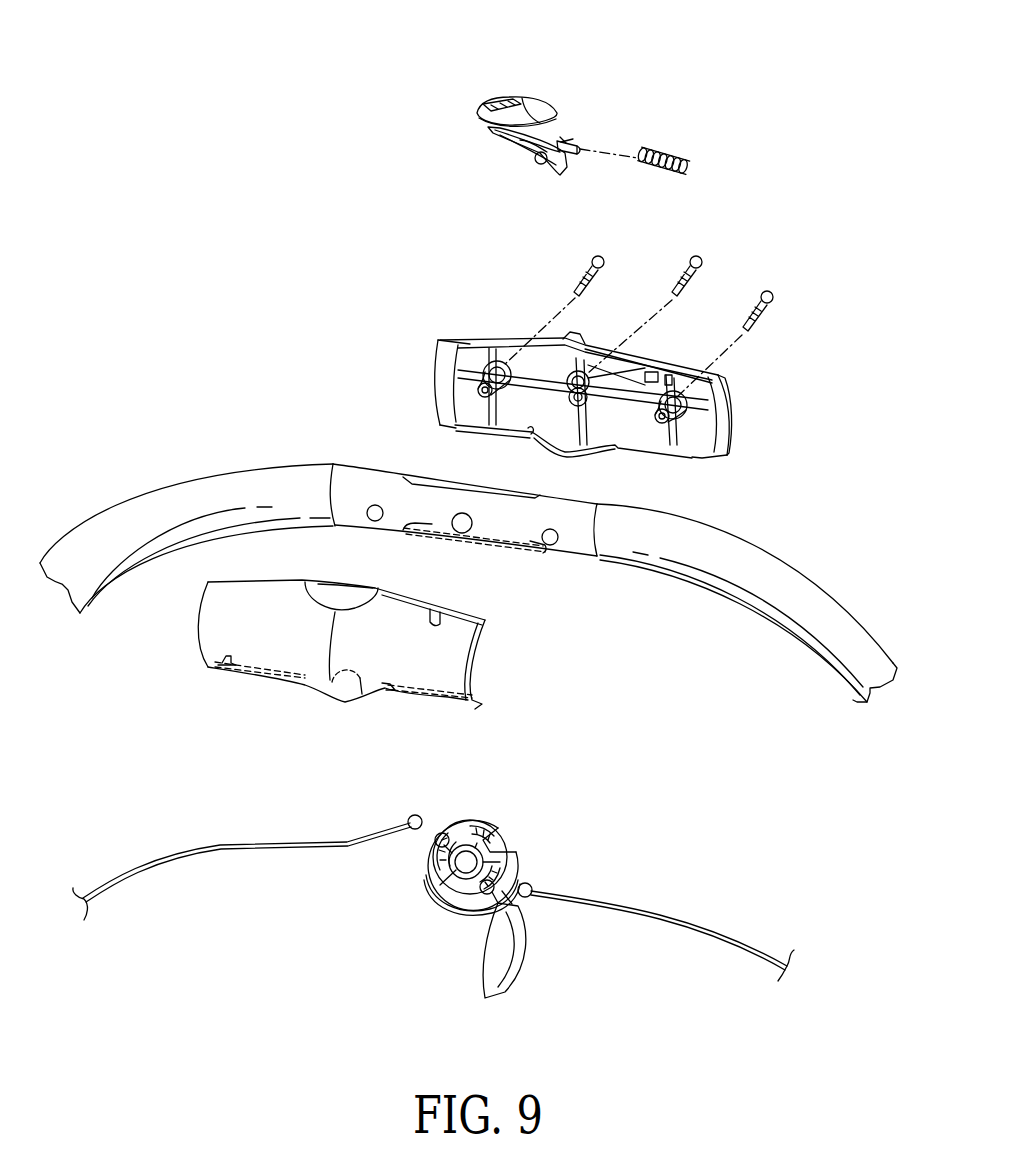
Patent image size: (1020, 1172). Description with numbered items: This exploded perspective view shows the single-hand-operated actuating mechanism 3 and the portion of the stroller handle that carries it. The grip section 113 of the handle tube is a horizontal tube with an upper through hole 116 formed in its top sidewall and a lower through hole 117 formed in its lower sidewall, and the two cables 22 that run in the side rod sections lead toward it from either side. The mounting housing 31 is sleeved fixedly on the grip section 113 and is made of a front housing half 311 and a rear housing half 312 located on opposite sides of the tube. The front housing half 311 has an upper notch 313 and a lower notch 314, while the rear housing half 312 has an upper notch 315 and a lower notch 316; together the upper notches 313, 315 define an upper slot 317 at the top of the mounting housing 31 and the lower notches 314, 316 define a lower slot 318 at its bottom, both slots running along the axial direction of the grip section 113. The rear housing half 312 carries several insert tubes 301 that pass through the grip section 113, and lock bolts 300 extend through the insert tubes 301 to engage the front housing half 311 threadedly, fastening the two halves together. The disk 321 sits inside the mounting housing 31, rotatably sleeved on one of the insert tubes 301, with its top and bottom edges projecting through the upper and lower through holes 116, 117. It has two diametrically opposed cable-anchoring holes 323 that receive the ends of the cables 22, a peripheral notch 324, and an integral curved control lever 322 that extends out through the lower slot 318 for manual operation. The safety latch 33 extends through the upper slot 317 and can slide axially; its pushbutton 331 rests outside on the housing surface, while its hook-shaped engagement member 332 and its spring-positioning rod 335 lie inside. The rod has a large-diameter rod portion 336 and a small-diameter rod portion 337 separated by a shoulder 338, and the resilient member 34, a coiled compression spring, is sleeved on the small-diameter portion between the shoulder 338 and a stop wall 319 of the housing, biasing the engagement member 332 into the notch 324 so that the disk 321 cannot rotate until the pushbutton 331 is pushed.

The single-hand-operated actuating mechanism 3 is at (823, 372).
The mounting housing 31 is at (647, 377).
The front housing half 311 is at (385, 635).
The rear housing half 312 is at (724, 447).
The upper notch 313 is at (360, 590).
The lower notch 314 is at (325, 685).
The upper notch 315 is at (577, 342).
The lower notch 316 is at (527, 441).
The upper slot 317 is at (568, 331).
The lower slot 318 is at (600, 450).
The stop wall 319 is at (437, 603).
The lock bolts 300 is at (591, 258).
The insert tubes 301 is at (493, 365).
The safety latch 33 is at (467, 85).
The pushbutton 331 is at (514, 98).
The engagement member 332 is at (538, 163).
The spring-positioning rod 335 is at (585, 137).
The large-diameter rod portion 336 is at (540, 127).
The small-diameter rod portion 337 is at (582, 138).
The shoulder 338 is at (565, 138).
The resilient member 34 is at (676, 150).
The grip section 113 is at (468, 557).
The upper through hole 116 is at (441, 485).
The lower through hole 117 is at (497, 550).
The cables 22 is at (280, 843).
The disk 321 is at (446, 872).
The control lever 322 is at (517, 950).
The cable-anchoring holes 323 is at (441, 833).
The notch 324 is at (498, 845).